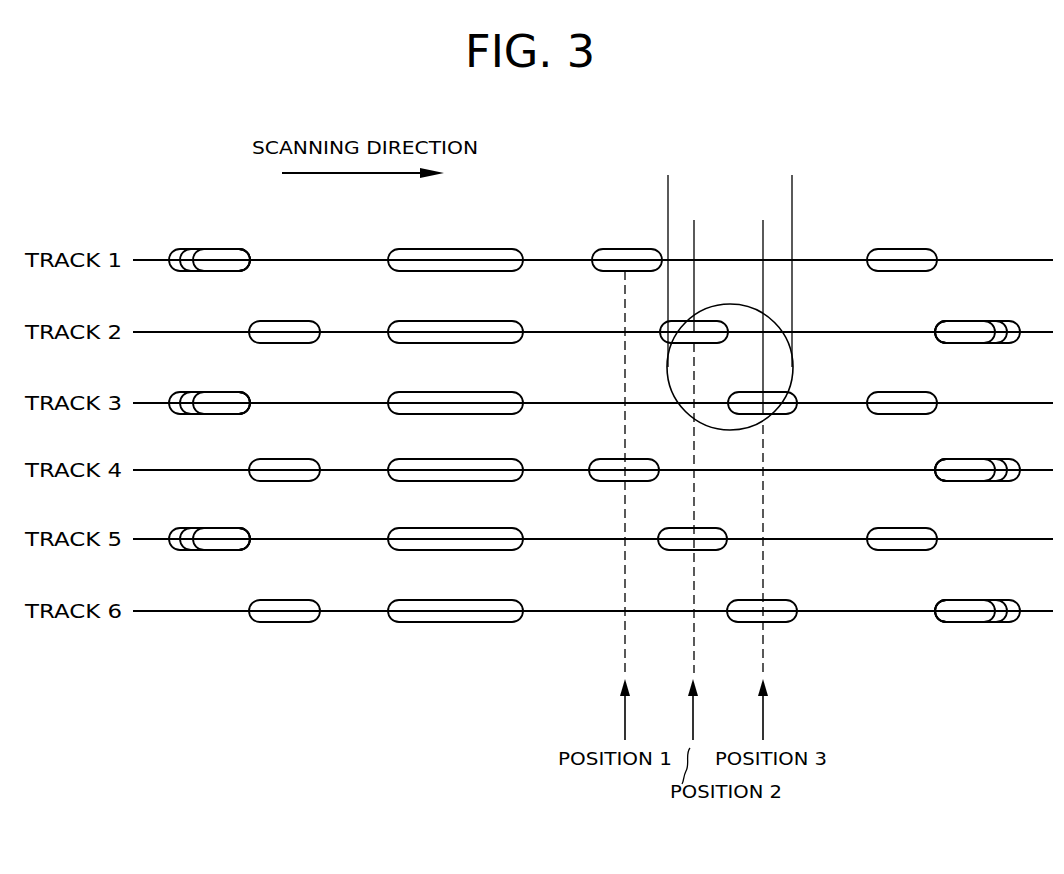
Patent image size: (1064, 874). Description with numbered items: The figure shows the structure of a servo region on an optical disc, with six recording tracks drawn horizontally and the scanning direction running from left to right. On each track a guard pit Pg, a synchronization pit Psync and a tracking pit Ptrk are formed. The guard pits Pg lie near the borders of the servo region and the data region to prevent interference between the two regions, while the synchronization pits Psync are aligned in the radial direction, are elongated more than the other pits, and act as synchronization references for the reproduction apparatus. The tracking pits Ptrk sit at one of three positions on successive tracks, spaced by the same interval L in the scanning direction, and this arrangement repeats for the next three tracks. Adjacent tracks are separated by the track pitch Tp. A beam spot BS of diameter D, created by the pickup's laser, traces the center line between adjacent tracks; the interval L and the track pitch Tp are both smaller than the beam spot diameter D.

The guard pit Pg is at (268, 622).
The synchronization pit Psync is at (410, 622).
The tracking pit Ptrk is at (640, 481).
The beam spot BS is at (740, 430).
The beam spot diameter D is at (792, 183).
The tracking pit interval L is at (763, 230).
The track pitch Tp is at (606, 332).